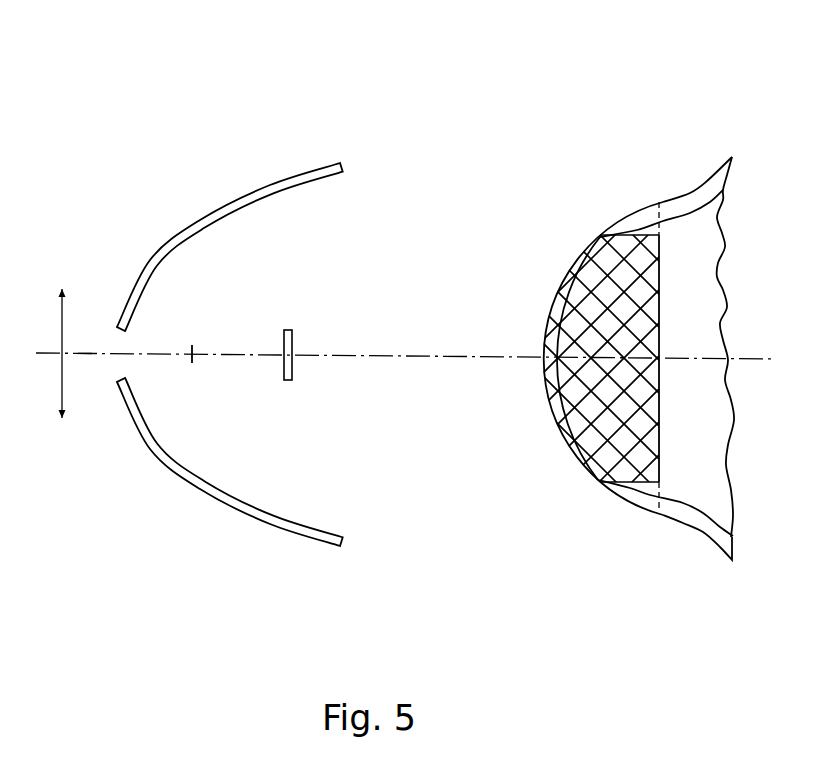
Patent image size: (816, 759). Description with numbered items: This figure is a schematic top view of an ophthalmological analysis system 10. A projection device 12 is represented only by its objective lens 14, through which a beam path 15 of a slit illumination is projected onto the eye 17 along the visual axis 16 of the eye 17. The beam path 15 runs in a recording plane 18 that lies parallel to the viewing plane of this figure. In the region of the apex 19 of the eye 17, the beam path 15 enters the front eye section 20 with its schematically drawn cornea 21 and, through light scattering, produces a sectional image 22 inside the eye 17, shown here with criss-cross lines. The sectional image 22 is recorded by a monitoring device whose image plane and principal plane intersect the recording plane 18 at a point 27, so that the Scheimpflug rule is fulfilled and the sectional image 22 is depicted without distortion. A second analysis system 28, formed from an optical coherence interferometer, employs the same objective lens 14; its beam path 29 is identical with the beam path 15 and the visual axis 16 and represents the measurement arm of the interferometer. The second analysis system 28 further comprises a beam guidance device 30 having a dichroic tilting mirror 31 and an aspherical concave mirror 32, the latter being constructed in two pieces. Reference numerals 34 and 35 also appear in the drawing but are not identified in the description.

The ophthalmological analysis system 10 is at (105, 74).
The projection device 12 is at (40, 348).
The objective lens 14 is at (62, 421).
The beam path 15 is at (72, 352).
The visual axis 16 is at (703, 357).
The eye 17 is at (665, 354).
The recording plane 18 is at (592, 380).
The apex 19 is at (451, 355).
The front eye section 20 is at (618, 203).
The cornea 21 is at (673, 510).
The sectional image 22 is at (620, 375).
The point 27 is at (197, 364).
The second analysis system 28 is at (230, 419).
The beam path 29 is at (85, 356).
The beam guidance device 30 is at (283, 557).
The dichroic tilting mirror 31 is at (290, 380).
The aspherical concave mirror 32 is at (173, 467).
The outer lens surface 34 is at (576, 262).
The inner lens surface 35 is at (563, 397).